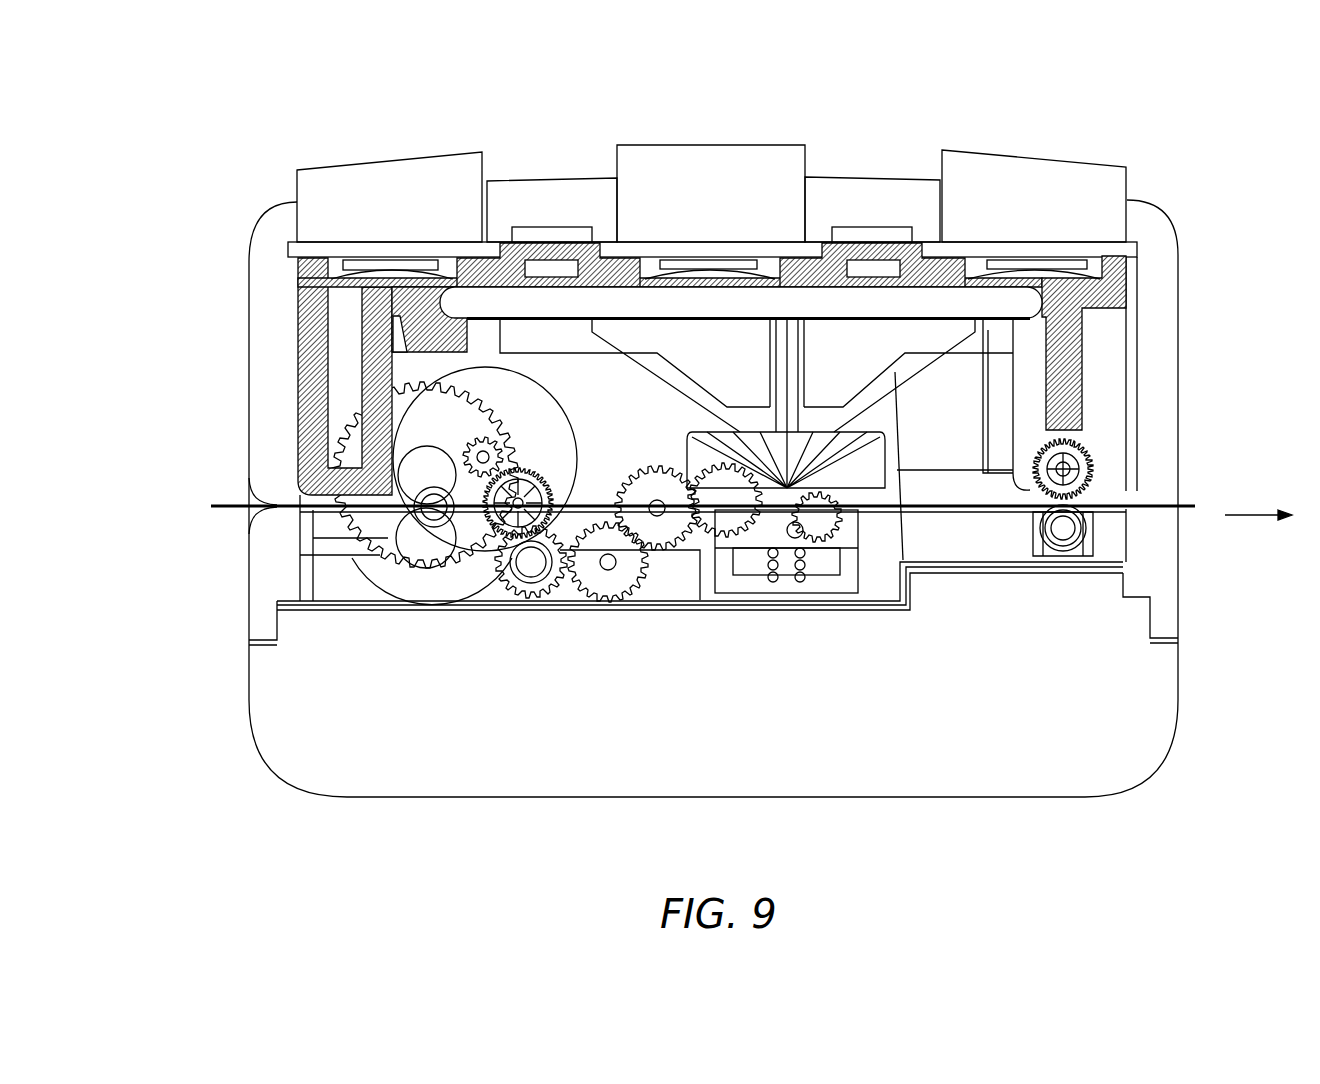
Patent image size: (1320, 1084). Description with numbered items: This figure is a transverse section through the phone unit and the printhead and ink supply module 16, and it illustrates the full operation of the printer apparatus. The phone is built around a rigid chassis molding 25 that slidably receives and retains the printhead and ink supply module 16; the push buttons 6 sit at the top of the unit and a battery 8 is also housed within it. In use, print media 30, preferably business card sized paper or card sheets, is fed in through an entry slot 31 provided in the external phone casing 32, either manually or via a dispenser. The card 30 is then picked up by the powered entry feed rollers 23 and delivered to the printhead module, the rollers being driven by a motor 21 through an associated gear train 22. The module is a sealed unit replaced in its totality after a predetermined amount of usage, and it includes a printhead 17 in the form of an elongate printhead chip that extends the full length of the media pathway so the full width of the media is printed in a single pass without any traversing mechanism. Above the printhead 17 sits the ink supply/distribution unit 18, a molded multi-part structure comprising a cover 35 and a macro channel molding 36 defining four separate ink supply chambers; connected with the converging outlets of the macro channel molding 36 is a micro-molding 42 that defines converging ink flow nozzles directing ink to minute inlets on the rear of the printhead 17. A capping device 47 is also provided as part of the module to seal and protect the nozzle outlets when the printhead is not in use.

The push buttons 6 is at (665, 140).
The battery 8 is at (713, 628).
The printhead and ink supply module 16 is at (810, 303).
The printhead 17 is at (903, 560).
The ink supply/distribution unit 18 is at (958, 404).
The motor 21 is at (523, 400).
The gear train 22 is at (388, 553).
The feed rollers 23 is at (418, 575).
The chassis molding 25 is at (1117, 256).
The print media 30 is at (1198, 502).
The entry slot 31 is at (249, 491).
The external phone casing 32 is at (269, 294).
The cover 35 is at (1005, 347).
The macro channel molding 36 is at (947, 447).
The micro-molding 42 is at (867, 473).
The capping device 47 is at (793, 510).